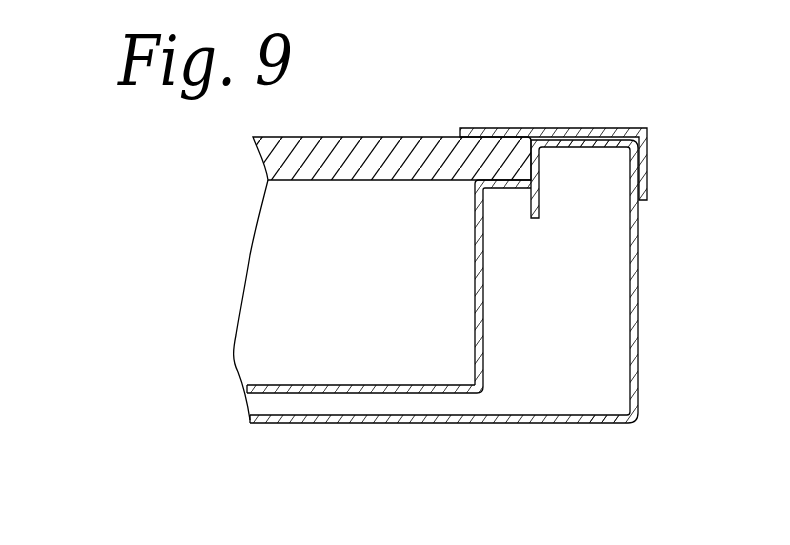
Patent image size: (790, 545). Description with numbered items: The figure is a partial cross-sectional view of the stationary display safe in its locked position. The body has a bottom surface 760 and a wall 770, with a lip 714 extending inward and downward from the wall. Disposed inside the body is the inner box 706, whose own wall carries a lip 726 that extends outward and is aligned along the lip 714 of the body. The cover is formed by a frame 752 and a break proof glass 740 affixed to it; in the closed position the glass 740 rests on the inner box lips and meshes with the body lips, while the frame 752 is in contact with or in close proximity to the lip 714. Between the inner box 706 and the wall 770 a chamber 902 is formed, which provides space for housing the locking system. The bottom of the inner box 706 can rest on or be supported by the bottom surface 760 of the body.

The break proof glass 740 is at (387, 137).
The frame 752 is at (608, 128).
The wall 770 is at (632, 333).
The lip 714 is at (583, 146).
The bottom surface 760 is at (413, 423).
The chamber 902 is at (617, 380).
The lip 726 is at (503, 190).
The inner box 706 is at (337, 385).